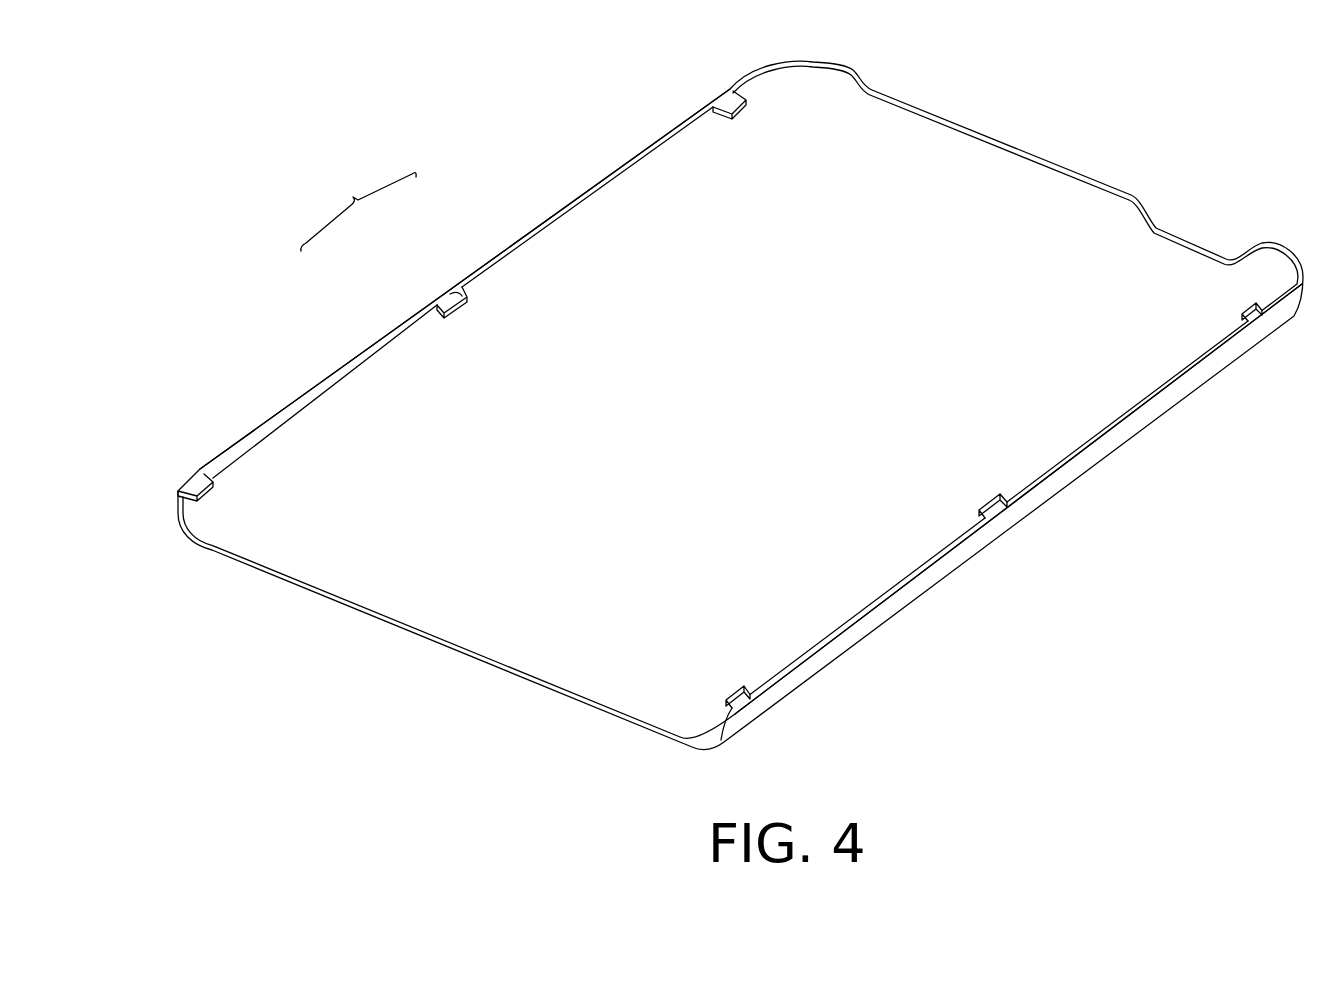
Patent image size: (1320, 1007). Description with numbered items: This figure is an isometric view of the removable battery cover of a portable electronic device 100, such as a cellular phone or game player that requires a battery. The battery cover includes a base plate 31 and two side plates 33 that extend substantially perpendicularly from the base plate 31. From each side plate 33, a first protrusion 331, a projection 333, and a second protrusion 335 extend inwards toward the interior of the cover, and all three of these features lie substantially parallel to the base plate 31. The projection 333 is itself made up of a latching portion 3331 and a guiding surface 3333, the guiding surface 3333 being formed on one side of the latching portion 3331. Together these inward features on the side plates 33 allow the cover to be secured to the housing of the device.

The portable electronic device 100 is at (463, 155).
The base plate 31 is at (457, 608).
The side plate 33 is at (563, 242).
The first protrusion 331 is at (199, 484).
The projection 333 is at (355, 212).
The latching portion 3331 is at (443, 297).
The guiding surface 3333 is at (458, 290).
The second protrusion 335 is at (728, 98).